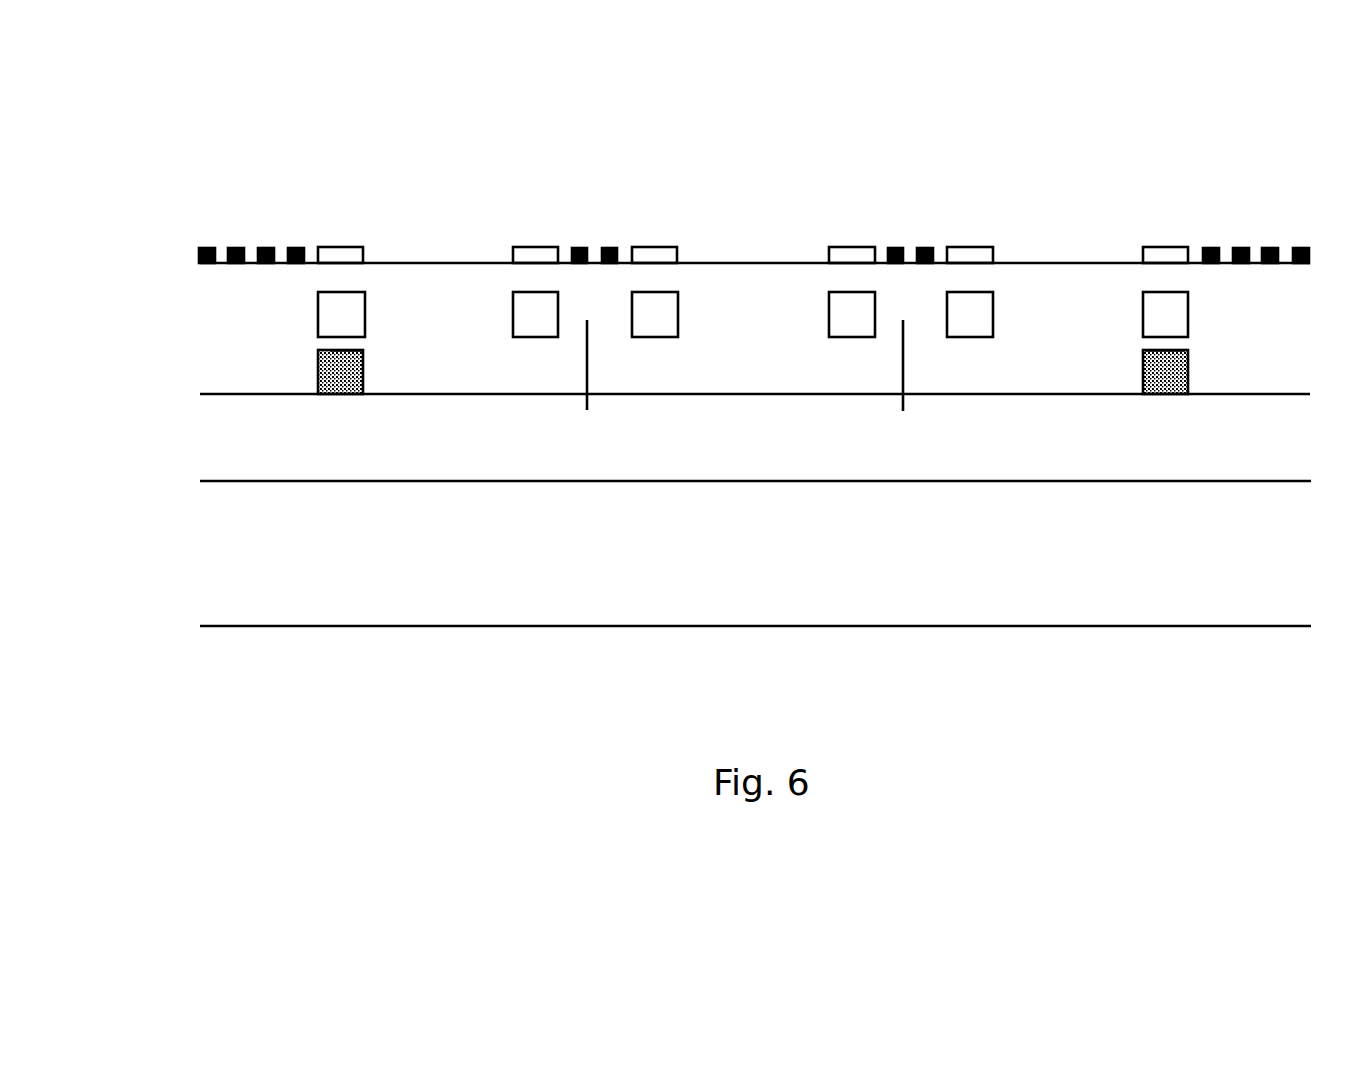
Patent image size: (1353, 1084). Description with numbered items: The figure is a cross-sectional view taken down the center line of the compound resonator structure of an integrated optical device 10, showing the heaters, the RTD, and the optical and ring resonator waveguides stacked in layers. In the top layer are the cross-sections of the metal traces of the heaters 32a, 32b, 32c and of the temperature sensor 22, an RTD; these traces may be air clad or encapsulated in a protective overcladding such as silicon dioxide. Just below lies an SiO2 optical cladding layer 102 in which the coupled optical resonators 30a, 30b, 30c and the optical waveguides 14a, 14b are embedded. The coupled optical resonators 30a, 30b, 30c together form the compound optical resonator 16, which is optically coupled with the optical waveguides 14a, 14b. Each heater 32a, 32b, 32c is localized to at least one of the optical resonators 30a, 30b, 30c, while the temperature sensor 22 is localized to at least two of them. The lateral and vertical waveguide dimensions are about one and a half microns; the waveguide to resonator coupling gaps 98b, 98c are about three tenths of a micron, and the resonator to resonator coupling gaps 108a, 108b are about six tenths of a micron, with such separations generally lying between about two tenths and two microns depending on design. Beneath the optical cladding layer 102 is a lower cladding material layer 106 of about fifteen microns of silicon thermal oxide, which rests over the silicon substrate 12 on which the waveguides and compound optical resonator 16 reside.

The integrated optical device 10 is at (501, 713).
The substrate 12 is at (763, 581).
The optical waveguide 14a is at (1190, 365).
The optical waveguide 14b is at (318, 365).
The compound optical resonator 16 is at (288, 305).
The temperature sensor 22 is at (262, 250).
The coupled optical resonator 30a is at (365, 306).
The coupled optical resonator 30b is at (678, 306).
The coupled optical resonator 30c is at (993, 306).
The heater 32a is at (348, 247).
The heater 32b is at (660, 247).
The heater 32c is at (977, 247).
The waveguide to resonator coupling gap 98b is at (378, 348).
The waveguide to resonator coupling gap 98c is at (1128, 352).
The optical cladding layer 102 is at (770, 377).
The lower cladding material layer 106 is at (770, 461).
The resonator to resonator coupling gap 108a is at (917, 391).
The resonator to resonator coupling gap 108b is at (591, 389).